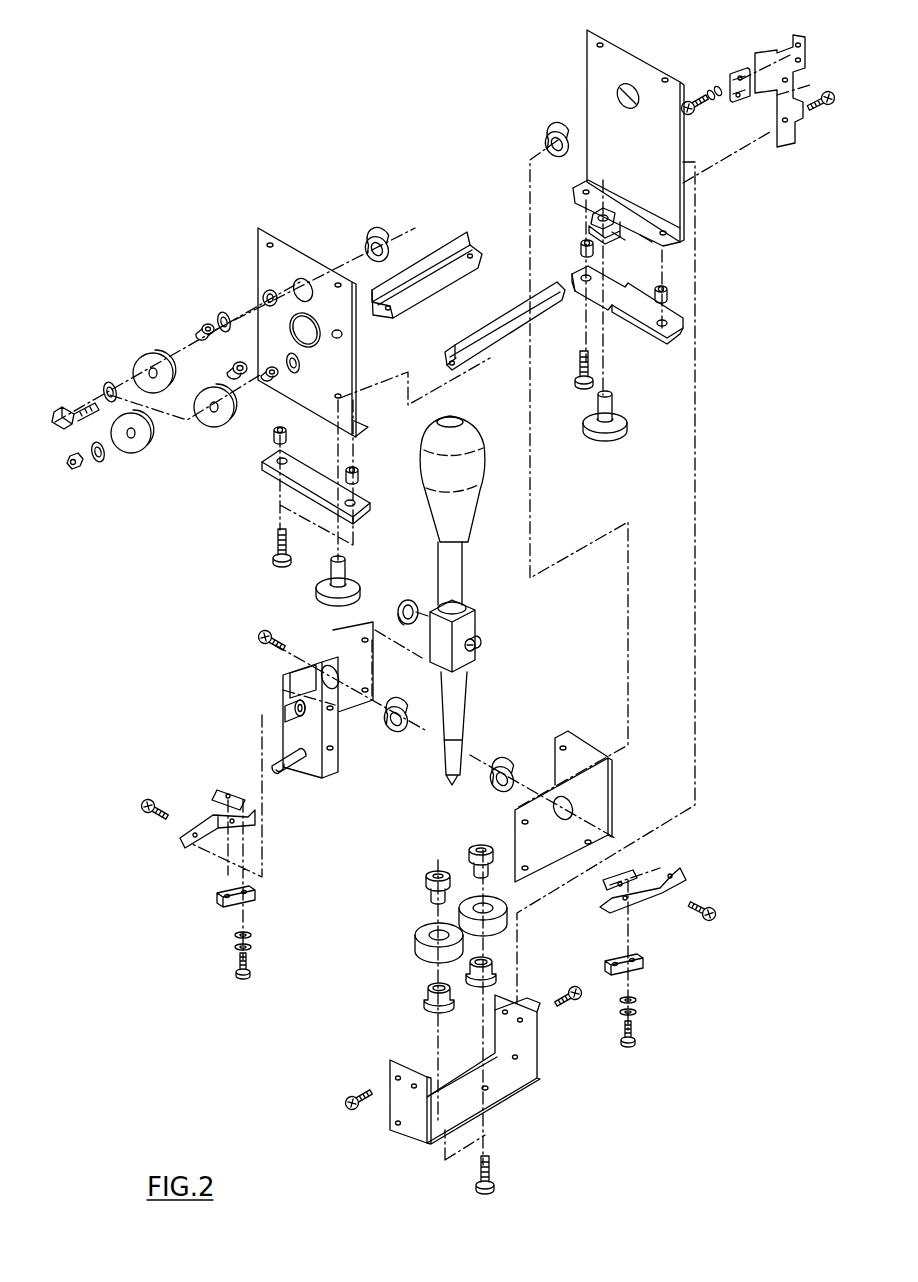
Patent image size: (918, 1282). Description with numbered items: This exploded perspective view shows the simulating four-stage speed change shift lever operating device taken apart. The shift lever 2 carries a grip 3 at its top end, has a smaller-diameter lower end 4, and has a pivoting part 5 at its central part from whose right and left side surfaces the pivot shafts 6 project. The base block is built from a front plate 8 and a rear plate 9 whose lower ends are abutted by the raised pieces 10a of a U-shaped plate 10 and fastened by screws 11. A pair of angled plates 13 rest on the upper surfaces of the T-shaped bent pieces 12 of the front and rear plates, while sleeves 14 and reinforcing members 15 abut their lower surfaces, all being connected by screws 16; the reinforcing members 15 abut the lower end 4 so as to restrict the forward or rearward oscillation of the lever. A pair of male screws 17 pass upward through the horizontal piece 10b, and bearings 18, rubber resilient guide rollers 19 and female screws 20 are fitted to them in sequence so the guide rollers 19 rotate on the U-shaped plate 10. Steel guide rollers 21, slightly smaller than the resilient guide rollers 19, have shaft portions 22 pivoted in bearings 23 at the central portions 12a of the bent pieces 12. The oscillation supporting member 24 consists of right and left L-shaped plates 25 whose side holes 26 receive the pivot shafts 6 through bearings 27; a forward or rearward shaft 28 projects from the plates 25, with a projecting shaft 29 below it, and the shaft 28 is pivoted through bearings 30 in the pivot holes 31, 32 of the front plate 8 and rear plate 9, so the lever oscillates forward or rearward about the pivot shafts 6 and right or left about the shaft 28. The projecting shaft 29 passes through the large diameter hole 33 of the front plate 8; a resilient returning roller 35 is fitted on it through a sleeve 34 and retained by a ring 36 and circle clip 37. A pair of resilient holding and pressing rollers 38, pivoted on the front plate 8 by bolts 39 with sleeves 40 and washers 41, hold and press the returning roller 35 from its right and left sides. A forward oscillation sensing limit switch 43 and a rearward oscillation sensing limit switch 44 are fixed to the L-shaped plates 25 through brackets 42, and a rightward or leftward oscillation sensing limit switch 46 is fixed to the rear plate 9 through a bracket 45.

The shift lever 2 is at (462, 572).
The grip 3 is at (470, 455).
The lower end 4 is at (447, 790).
The pivoting part 5 is at (478, 620).
The pivot shafts 6 is at (420, 600).
The front plate 8 is at (258, 270).
The rear plate 9 is at (620, 65).
The U-shaped plate 10 is at (416, 1143).
The raised pieces 10a is at (535, 1045).
The horizontal piece 10b is at (520, 1098).
The screws 11 is at (346, 1106).
The T-shaped bent pieces 12 is at (643, 233).
The central portions 12a is at (617, 238).
The angled plates 13 is at (444, 256).
The sleeves 14 is at (583, 245).
The reinforcing members 15 is at (680, 330).
The screws 16 is at (577, 382).
The male screws 17 is at (498, 1184).
The bearings 18 is at (478, 995).
The resilient guide rollers 19 is at (462, 908).
The female screws 20 is at (468, 852).
The steel guide rollers 21 is at (613, 445).
The shaft portions 22 is at (613, 396).
The bearings 23 is at (597, 212).
The oscillation supporting member 24 is at (180, 703).
The L-shaped plates 25 is at (283, 680).
The side holes 26 is at (330, 668).
The bearings 27 is at (390, 730).
The forward or rearward shaft 28 is at (285, 712).
The projecting shaft 29 is at (275, 778).
The bearings 30 is at (548, 130).
The pivot hole 31 is at (298, 285).
The pivot hole 32 is at (616, 94).
The large diameter hole 33 is at (262, 298).
The sleeve 34 is at (233, 365).
The resilient returning roller 35 is at (137, 452).
The ring 36 is at (98, 465).
The circle clip 37 is at (74, 470).
The resilient holding and pressing rollers 38 is at (135, 352).
The bolts 39 is at (56, 412).
The sleeves 40 is at (204, 324).
The washers 41 is at (218, 318).
The brackets 42 is at (178, 838).
The forward oscillation sensing limit switch 43 is at (640, 965).
The rearward oscillation sensing limit switch 44 is at (225, 907).
The bracket 45 is at (790, 85).
The rightward or leftward oscillation sensing limit switch 46 is at (738, 70).